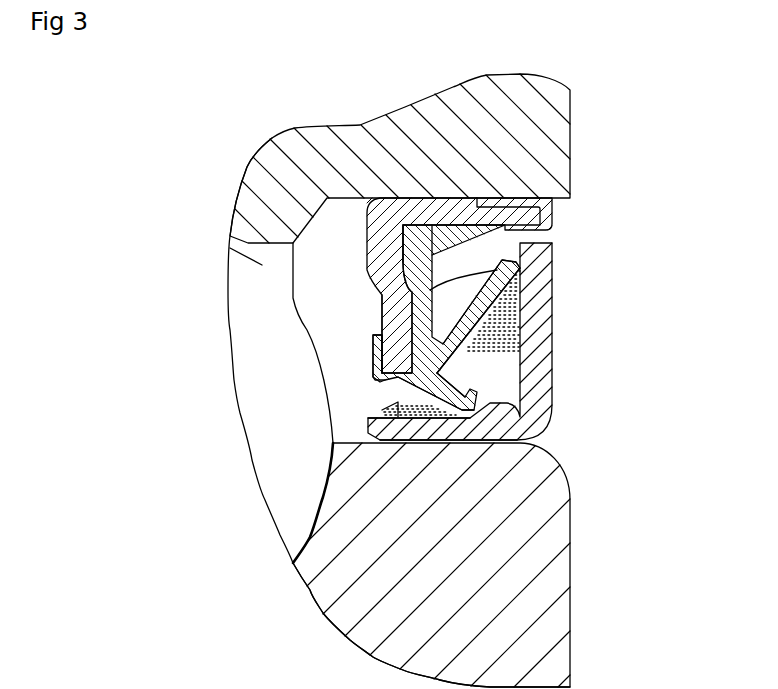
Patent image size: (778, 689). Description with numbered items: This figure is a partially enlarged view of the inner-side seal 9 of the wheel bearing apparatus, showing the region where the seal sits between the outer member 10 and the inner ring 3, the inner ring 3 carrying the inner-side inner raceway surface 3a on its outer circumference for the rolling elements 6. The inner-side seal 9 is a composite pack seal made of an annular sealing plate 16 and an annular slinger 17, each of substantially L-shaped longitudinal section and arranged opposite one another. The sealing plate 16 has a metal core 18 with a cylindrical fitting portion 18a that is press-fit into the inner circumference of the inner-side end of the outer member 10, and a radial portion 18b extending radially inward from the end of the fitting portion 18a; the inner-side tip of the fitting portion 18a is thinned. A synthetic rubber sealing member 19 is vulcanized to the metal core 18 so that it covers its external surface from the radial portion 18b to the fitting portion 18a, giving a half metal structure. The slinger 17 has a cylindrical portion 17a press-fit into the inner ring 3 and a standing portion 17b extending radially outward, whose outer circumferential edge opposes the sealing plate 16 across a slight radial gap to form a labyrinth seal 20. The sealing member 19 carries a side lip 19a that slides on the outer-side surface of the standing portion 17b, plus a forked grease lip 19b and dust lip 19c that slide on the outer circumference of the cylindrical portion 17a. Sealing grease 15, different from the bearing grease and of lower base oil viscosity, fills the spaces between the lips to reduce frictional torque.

The inner ring 3 is at (345, 610).
The inner raceway surface 3a is at (310, 537).
The rolling elements 6 is at (270, 468).
The inner-side seal 9 is at (590, 244).
The outer member 10 is at (277, 175).
The sealing grease 15 is at (510, 302).
The annular sealing plate 16 is at (203, 293).
The annular slinger 17 is at (647, 363).
The cylindrical portion 17a is at (520, 403).
The standing portion 17b is at (543, 353).
The metal core 18 is at (267, 265).
The cylindrical fitting portion 18a is at (375, 199).
The radial portion 18b is at (390, 288).
The sealing member 19 is at (267, 343).
The side lip 19a is at (373, 336).
The grease lip 19b is at (382, 410).
The dust lip 19c is at (398, 382).
The labyrinth seal 20 is at (520, 232).